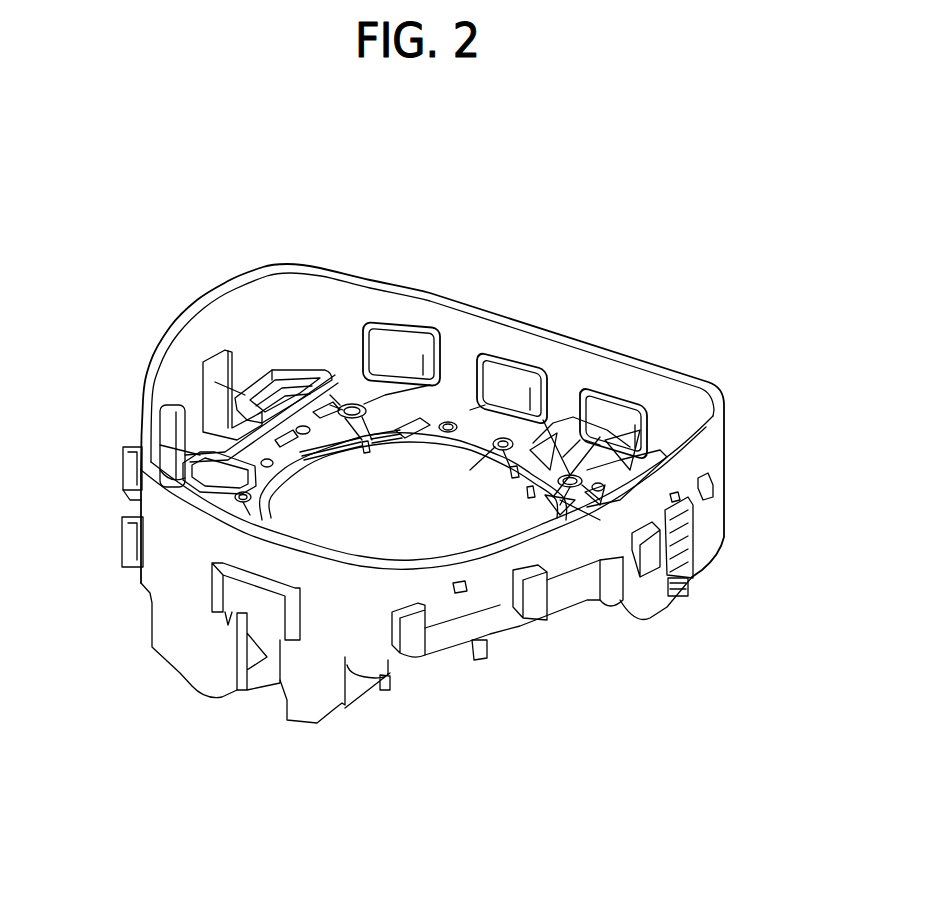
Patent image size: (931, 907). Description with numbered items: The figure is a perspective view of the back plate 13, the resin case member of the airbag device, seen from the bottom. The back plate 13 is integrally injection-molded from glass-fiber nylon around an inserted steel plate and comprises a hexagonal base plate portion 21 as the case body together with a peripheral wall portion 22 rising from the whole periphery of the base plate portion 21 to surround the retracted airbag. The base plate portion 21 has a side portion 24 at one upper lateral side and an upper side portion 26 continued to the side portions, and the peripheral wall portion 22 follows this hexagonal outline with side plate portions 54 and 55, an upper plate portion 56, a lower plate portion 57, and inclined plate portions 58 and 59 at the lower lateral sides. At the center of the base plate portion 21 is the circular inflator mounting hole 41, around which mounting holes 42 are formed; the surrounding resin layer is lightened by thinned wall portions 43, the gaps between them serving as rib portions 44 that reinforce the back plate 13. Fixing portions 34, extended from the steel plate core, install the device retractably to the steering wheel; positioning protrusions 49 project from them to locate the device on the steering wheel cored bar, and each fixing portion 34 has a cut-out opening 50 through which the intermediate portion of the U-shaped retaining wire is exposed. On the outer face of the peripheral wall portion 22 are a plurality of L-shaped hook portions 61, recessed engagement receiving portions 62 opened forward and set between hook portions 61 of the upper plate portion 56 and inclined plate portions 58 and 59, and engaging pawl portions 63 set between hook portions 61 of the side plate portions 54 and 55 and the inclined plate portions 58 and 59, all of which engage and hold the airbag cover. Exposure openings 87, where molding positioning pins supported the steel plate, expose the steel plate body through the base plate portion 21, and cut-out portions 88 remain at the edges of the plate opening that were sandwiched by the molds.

The back plate 13 is at (432, 493).
The base plate portion 21 is at (410, 395).
The peripheral wall portion 22 is at (572, 338).
The side portion 24 is at (242, 293).
The upper side portion 26 is at (455, 375).
The fixing portion 34 is at (705, 562).
The inflator mounting hole 41 is at (475, 455).
The mounting hole 42 is at (366, 454).
The thinned wall portion 43 is at (290, 445).
The rib portion 44 is at (250, 503).
The positioning protrusion 49 is at (680, 588).
The cut-out opening 50 is at (210, 353).
The side plate portion 54 is at (215, 320).
The side plate portion 55 is at (724, 432).
The upper plate portion 56 is at (318, 290).
The lower plate portion 57 is at (165, 620).
The inclined plate portion 58 is at (130, 495).
The inclined plate portion 59 is at (462, 607).
The hook portion 61 is at (123, 467).
The engagement receiving portion 62 is at (160, 425).
The engaging pawl portion 63 is at (135, 510).
The exposure opening 87 is at (257, 402).
The cut-out portion 88 is at (330, 360).